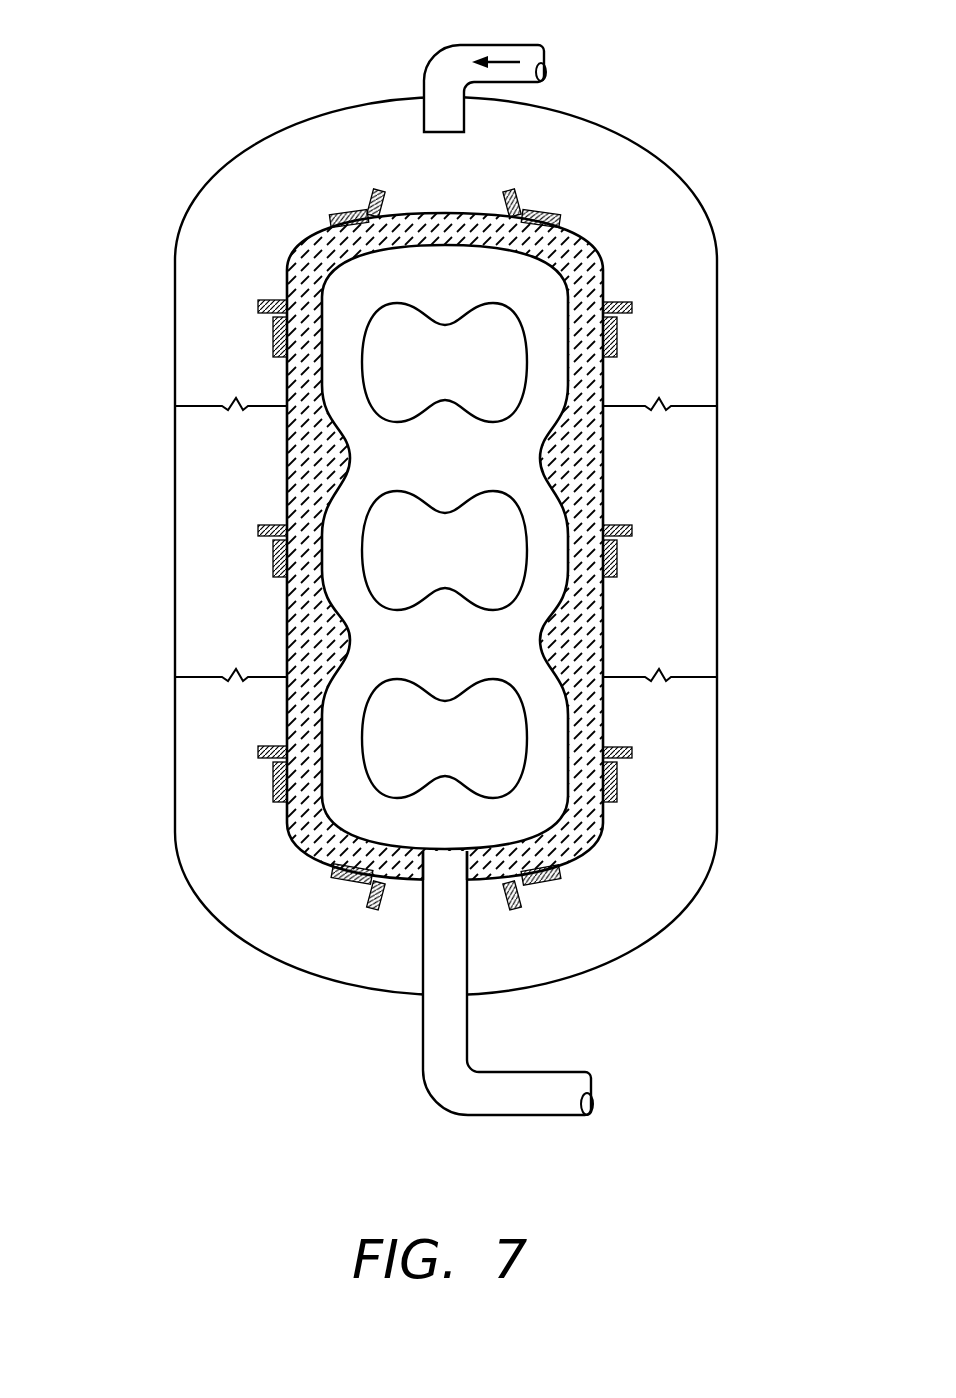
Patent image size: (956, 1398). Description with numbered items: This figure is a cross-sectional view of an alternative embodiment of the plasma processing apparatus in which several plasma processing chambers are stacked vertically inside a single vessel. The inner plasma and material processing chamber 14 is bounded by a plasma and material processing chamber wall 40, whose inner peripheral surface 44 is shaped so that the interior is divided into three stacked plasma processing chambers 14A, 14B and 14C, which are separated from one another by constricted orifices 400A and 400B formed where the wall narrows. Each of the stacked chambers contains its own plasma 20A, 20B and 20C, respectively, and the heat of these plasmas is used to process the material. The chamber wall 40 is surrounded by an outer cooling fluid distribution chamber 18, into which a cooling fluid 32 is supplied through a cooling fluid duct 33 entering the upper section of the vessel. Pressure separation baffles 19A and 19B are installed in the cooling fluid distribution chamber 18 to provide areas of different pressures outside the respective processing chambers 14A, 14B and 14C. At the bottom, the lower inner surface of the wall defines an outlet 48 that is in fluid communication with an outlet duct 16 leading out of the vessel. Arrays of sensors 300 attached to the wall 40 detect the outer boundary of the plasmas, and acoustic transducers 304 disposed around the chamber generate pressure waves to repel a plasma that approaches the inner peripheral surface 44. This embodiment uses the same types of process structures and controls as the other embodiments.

The plasma and material processing chamber 14 is at (603, 467).
The plasma processing chamber 14A is at (343, 290).
The plasma processing chamber 14B is at (340, 555).
The plasma processing chamber 14C is at (530, 675).
The outlet duct 16 is at (422, 923).
The cooling fluid distribution chamber 18 is at (718, 352).
The pressure separation baffle 19A is at (263, 408).
The pressure separation baffle 19B is at (263, 679).
The plasma 20A is at (468, 335).
The plasma 20B is at (503, 582).
The plasma 20C is at (505, 762).
The cooling fluid 32 is at (500, 64).
The cooling fluid duct 33 is at (422, 85).
The plasma and material processing chamber wall 40 is at (603, 498).
The inner peripheral surface 44 is at (352, 637).
The outlet 48 is at (458, 892).
The sensors 300 is at (630, 750).
The acoustic transducers 304 is at (617, 336).
The constricted orifice 400A is at (347, 458).
The constricted orifice 400B is at (349, 643).